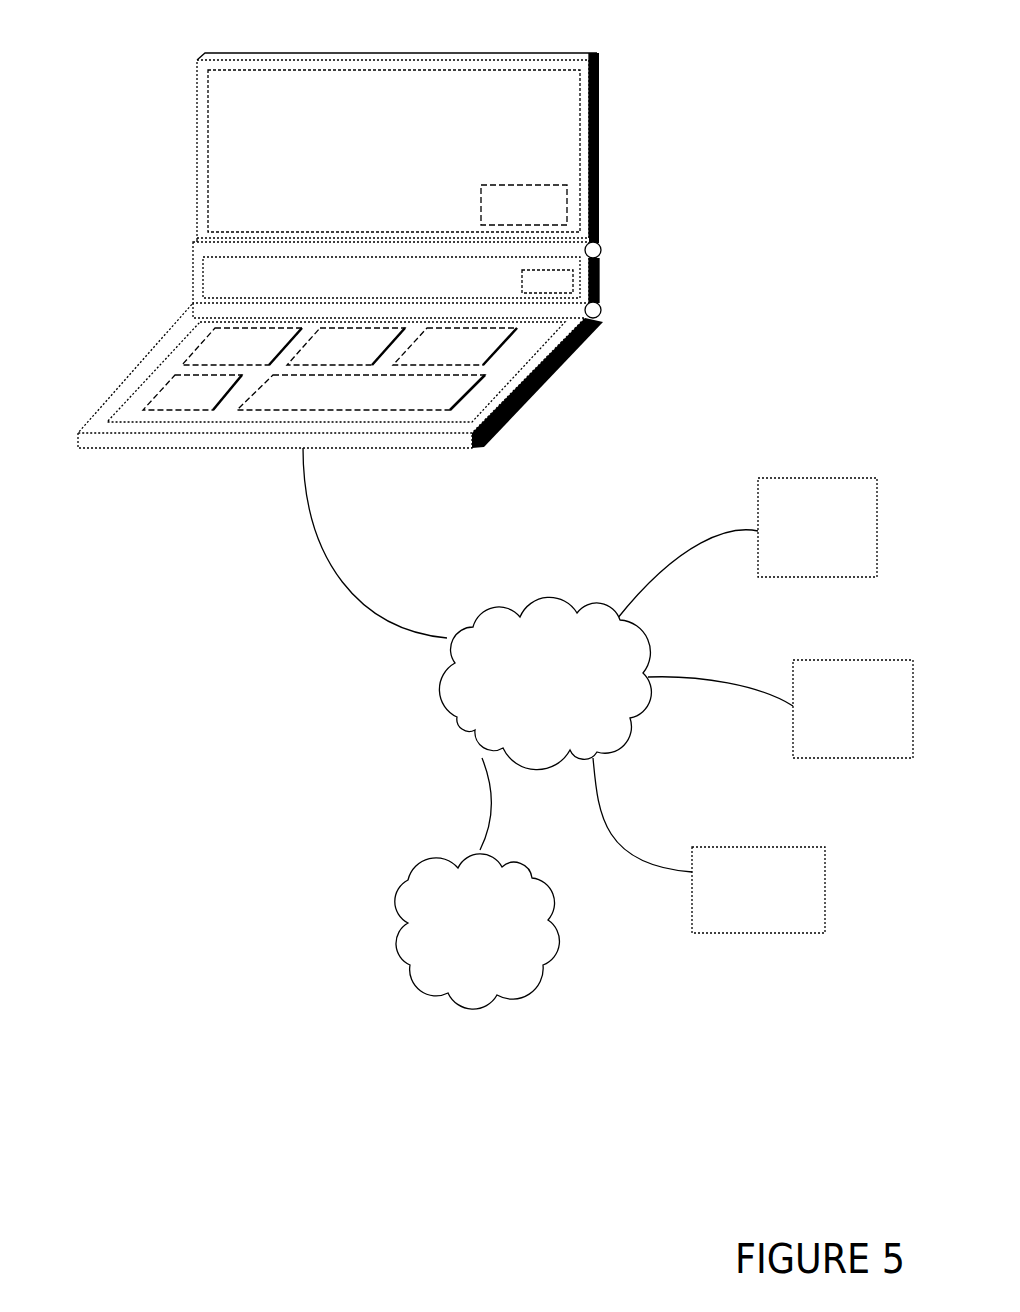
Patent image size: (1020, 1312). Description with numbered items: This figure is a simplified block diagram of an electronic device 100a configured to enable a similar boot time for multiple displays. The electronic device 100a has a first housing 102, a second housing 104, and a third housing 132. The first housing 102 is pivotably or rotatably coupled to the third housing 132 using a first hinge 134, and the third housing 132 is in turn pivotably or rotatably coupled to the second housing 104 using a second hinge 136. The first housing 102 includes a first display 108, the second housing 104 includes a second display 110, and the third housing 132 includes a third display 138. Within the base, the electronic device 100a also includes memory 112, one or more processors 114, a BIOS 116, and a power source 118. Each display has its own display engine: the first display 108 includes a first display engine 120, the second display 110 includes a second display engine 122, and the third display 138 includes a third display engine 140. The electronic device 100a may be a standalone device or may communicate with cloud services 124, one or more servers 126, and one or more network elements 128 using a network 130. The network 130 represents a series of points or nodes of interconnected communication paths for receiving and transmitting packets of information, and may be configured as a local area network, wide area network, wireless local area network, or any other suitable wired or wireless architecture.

The electronic device 100a is at (717, 76).
The first housing 102 is at (583, 52).
The second housing 104 is at (110, 398).
The first display 108 is at (218, 152).
The second display 110 is at (540, 346).
The memory 112 is at (242, 346).
The processors 114 is at (346, 346).
The BIOS 116 is at (192, 392).
The power source 118 is at (361, 392).
The first display engine 120 is at (524, 205).
The second display engine 122 is at (455, 346).
The cloud services 124 is at (477, 931).
The servers 126 is at (758, 890).
The network elements 128 is at (835, 618).
The network 130 is at (545, 683).
The third housing 132 is at (600, 283).
The first hinge 134 is at (609, 243).
The second hinge 136 is at (609, 313).
The third display 138 is at (227, 288).
The third display engine 140 is at (547, 281).